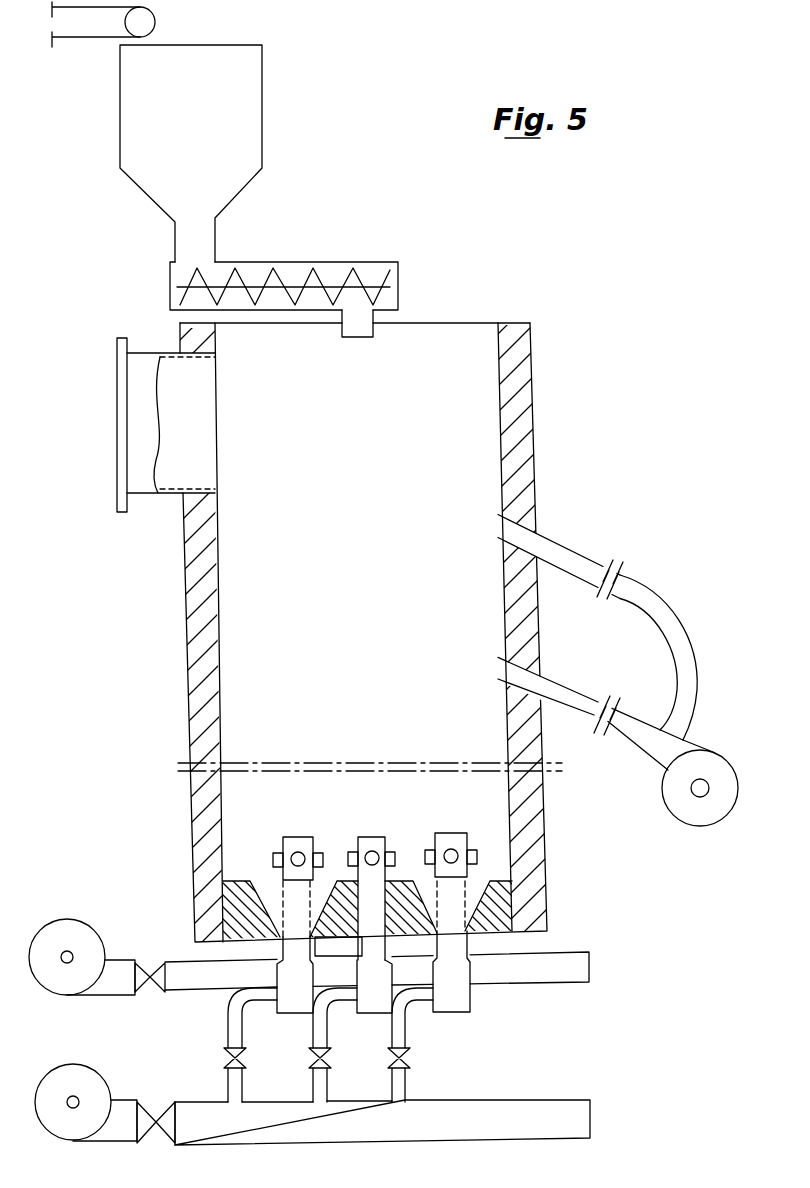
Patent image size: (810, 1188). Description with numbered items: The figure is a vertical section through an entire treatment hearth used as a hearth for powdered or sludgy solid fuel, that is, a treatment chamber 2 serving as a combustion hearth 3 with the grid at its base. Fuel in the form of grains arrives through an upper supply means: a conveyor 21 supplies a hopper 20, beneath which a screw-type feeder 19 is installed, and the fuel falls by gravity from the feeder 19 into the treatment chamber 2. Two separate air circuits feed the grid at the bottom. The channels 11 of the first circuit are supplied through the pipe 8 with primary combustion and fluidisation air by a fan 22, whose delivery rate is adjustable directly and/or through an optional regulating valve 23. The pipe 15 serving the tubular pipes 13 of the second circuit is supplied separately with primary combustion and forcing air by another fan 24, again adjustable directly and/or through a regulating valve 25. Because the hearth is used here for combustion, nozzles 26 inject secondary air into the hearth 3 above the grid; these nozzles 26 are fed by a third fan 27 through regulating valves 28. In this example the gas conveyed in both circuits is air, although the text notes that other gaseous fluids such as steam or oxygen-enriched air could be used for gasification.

The treatment chamber 2 is at (243, 587).
The combustion hearth 3 is at (248, 665).
The pipe 8 is at (440, 1100).
The channels 11 is at (293, 943).
The tubular pipes 13 is at (372, 838).
The pipe 15 is at (552, 973).
The screw-type feeder 19 is at (297, 272).
The hopper 20 is at (255, 117).
The conveyor 21 is at (82, 40).
The fan 22 is at (70, 1070).
The regulating valve 23 is at (158, 1112).
The fan 24 is at (63, 930).
The regulating valve 25 is at (147, 967).
The nozzles 26 is at (568, 558).
The fan 27 is at (701, 752).
The regulating valves 28 is at (612, 722).